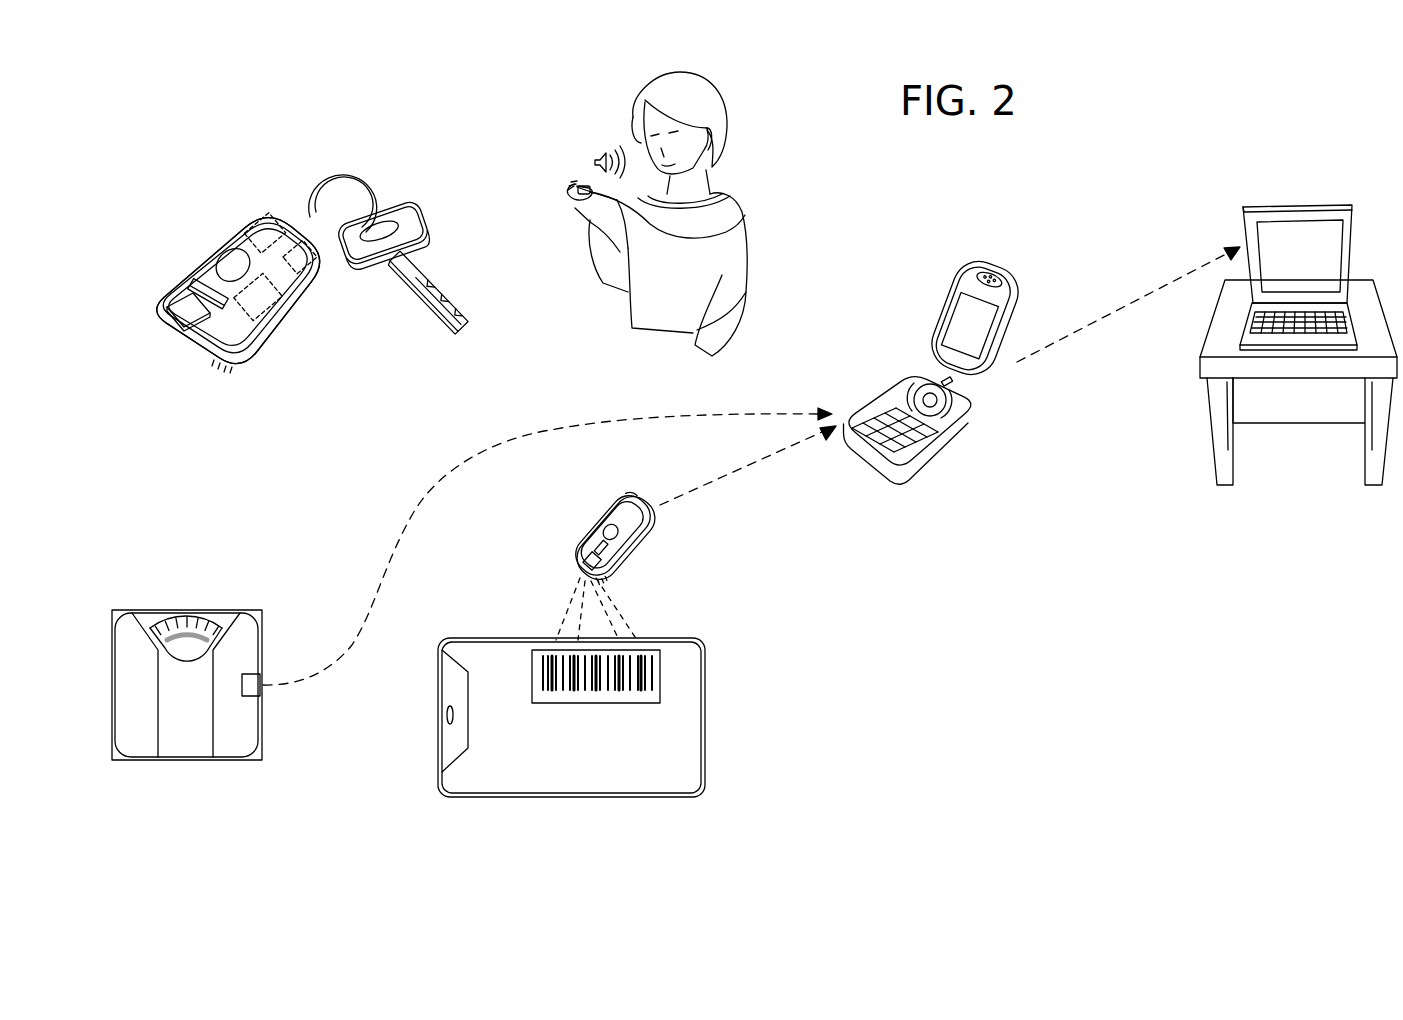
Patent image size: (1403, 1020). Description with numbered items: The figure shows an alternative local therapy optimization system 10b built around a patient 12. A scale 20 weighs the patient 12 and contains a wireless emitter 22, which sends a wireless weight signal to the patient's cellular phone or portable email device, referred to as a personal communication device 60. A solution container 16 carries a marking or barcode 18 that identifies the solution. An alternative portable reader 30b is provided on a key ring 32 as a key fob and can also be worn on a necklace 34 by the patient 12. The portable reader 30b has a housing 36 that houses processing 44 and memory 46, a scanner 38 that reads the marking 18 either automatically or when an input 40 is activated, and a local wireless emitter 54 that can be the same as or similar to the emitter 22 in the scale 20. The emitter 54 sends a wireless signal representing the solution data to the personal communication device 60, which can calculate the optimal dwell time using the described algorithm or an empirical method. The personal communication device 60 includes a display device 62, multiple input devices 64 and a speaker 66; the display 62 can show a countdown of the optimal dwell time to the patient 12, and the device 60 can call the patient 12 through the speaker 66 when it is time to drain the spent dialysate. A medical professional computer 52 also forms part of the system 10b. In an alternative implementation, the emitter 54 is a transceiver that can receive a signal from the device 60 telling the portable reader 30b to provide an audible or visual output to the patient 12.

The system 10b is at (483, 118).
The patient 12 is at (737, 210).
The solution container 16 is at (680, 687).
The marking or barcode 18 is at (655, 648).
The scale 20 is at (158, 610).
The wireless emitter 22 is at (253, 682).
The portable reader 30b is at (272, 198).
The key ring 32 is at (343, 170).
The necklace 34 is at (741, 231).
The housing 36 is at (210, 252).
The scanner 38 is at (183, 312).
The input 40 is at (198, 288).
The processing 44 is at (260, 222).
The memory 46 is at (313, 268).
The medical professional computer 52 is at (1260, 205).
The local wireless emitter 54 is at (267, 303).
The personal communication device 60 is at (956, 440).
The display device 62 is at (963, 327).
The input devices 64 is at (888, 404).
The speaker 66 is at (980, 273).